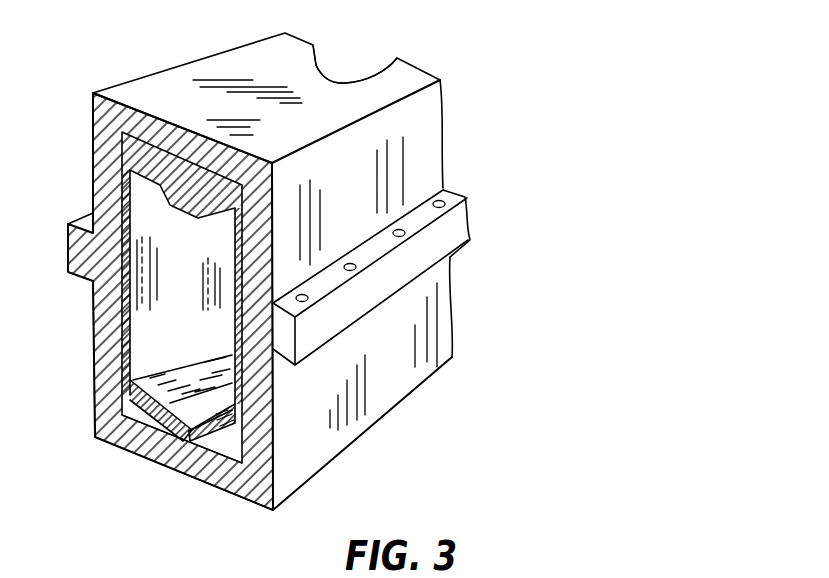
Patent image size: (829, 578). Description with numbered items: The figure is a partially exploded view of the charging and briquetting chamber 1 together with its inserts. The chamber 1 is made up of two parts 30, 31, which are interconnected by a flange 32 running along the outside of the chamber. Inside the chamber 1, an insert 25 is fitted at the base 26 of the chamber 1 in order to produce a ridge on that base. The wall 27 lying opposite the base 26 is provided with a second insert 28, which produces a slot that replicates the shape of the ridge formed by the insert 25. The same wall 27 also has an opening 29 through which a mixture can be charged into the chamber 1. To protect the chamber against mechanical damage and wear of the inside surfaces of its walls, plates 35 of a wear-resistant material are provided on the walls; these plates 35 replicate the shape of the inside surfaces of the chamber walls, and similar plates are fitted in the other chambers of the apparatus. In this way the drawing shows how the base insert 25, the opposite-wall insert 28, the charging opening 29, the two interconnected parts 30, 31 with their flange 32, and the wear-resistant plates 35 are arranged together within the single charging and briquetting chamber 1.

The charging and briquetting chamber 1 is at (142, 88).
The insert 25 is at (189, 440).
The base 26 is at (127, 447).
The wall 27 is at (110, 118).
The insert 28 is at (126, 174).
The opening 29 is at (356, 66).
The part 30 is at (388, 400).
The part 31 is at (431, 136).
The flange 32 is at (446, 188).
The plates 35 is at (96, 326).